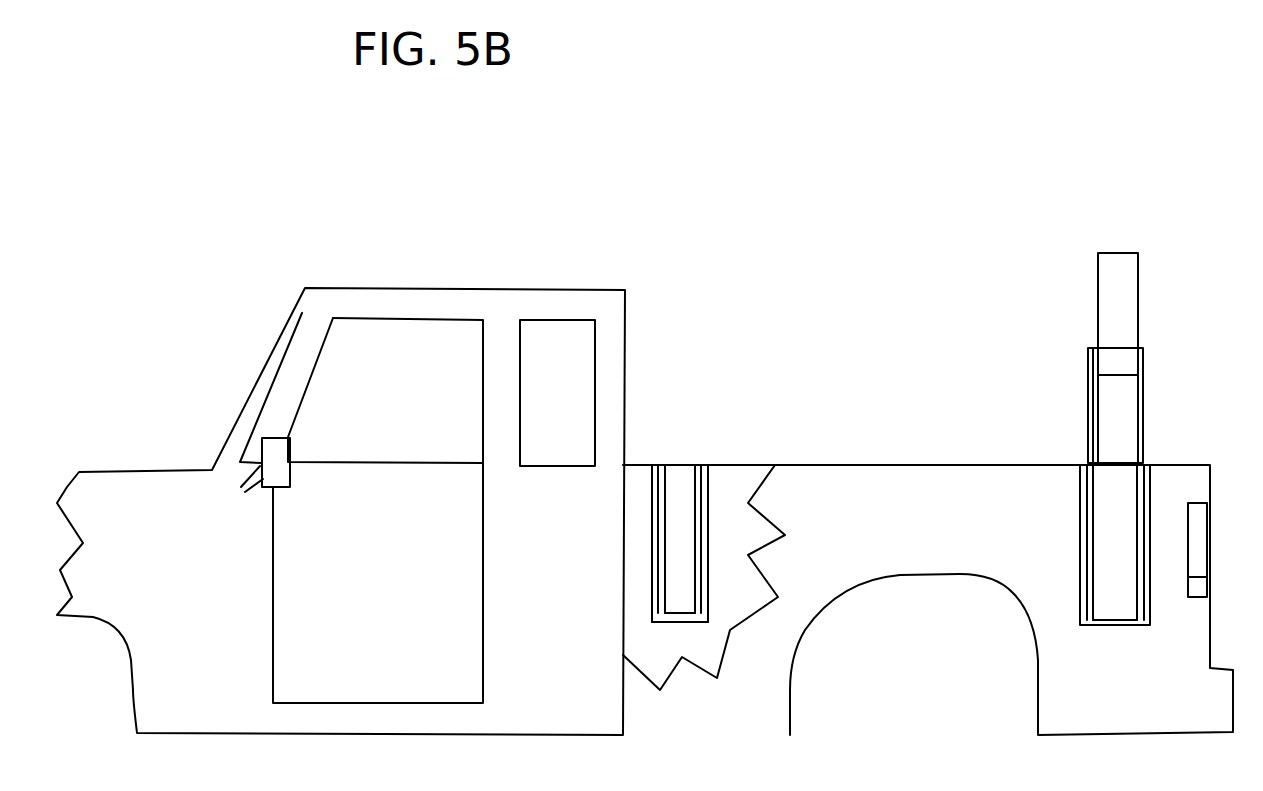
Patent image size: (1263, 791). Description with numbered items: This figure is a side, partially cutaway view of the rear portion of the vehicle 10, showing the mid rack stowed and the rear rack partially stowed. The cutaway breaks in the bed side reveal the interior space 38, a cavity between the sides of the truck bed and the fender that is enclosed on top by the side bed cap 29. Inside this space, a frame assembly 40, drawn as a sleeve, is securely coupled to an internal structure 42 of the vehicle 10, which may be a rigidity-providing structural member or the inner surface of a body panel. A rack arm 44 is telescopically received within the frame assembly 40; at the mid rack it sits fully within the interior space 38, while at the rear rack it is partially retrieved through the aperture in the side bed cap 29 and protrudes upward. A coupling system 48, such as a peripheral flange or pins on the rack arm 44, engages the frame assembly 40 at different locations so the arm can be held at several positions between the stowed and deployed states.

The vehicle 10 is at (545, 278).
The side bed cap 29 is at (917, 463).
The interior space 38 is at (752, 532).
The frame assembly 40 is at (667, 553).
The internal structure 42 is at (653, 532).
The rack arm 44 is at (680, 540).
The coupling system 48 is at (707, 600).